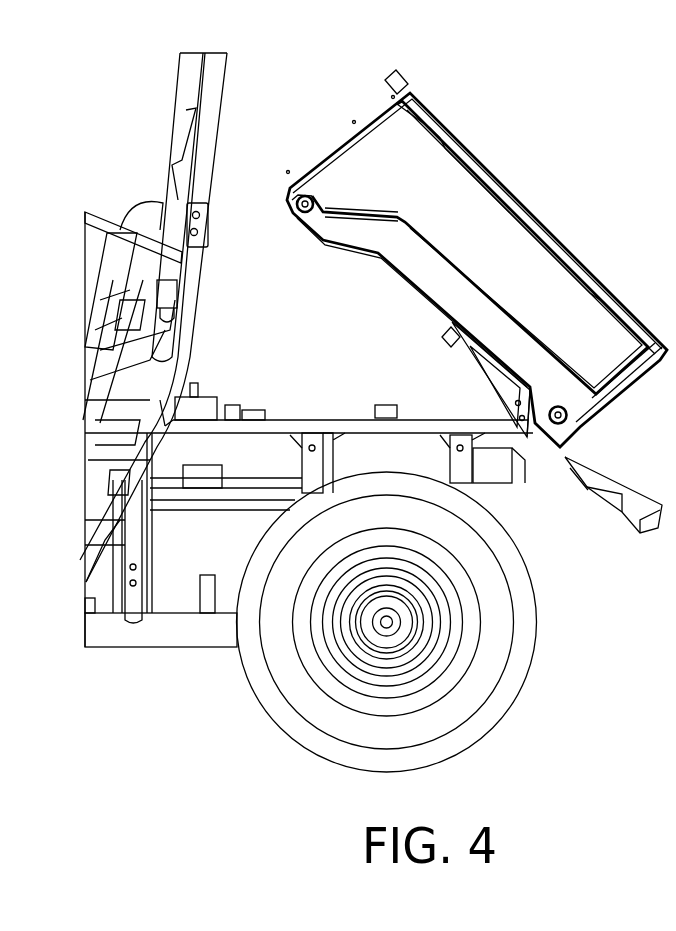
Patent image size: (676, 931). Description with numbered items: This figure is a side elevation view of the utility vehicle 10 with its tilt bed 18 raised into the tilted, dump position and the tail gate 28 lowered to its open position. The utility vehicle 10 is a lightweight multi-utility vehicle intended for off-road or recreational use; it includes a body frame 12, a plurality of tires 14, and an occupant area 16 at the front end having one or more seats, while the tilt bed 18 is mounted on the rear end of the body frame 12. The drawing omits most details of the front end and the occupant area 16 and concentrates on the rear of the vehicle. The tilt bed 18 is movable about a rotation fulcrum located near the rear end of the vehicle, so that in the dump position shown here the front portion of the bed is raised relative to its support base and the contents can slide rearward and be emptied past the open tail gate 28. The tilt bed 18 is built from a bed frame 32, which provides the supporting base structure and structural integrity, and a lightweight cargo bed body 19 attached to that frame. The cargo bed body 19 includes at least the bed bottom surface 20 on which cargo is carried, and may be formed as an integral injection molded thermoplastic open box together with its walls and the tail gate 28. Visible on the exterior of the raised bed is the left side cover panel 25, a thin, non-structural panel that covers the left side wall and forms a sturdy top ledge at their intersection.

The utility vehicle 10 is at (272, 38).
The body frame 12 is at (210, 143).
The tires 14 is at (470, 735).
The occupant area 16 is at (125, 192).
The tilt bed 18 is at (515, 172).
The cargo bed body 19 is at (560, 293).
The bed bottom surface 20 is at (410, 277).
The left side cover panel 25 is at (483, 240).
The tail gate 28 is at (618, 490).
The bed frame 32 is at (475, 366).